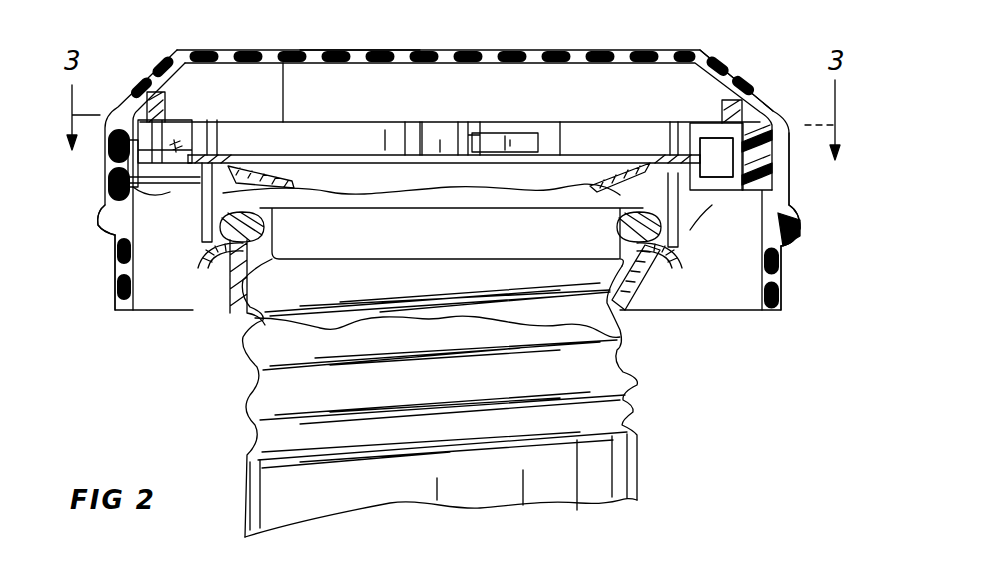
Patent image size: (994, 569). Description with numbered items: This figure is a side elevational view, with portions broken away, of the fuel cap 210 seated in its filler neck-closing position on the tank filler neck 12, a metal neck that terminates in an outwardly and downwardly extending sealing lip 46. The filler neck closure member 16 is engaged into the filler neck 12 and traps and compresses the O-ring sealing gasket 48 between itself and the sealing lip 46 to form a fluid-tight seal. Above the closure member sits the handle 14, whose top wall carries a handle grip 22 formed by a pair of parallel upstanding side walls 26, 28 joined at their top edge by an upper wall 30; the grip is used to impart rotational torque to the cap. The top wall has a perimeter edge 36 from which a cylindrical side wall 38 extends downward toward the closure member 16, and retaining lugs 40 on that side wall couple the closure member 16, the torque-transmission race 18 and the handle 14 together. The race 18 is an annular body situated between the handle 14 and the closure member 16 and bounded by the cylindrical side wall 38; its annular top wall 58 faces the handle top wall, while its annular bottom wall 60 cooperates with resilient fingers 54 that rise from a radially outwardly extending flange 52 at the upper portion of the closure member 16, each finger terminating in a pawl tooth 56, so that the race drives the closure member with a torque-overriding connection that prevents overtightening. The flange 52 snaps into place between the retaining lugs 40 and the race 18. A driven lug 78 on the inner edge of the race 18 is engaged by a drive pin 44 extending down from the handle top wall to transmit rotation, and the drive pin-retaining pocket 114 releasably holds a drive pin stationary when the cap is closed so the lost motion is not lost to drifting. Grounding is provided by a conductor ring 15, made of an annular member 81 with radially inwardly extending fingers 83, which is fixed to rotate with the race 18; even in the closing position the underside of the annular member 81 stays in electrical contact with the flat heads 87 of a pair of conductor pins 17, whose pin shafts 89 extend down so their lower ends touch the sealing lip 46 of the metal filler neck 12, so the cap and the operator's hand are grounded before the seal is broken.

The tank filler neck 12 is at (247, 415).
The handle 14 is at (683, 50).
The conductor ring 15 is at (220, 140).
The filler neck closure member 16 is at (632, 332).
The conductor pins 17 is at (185, 242).
The torque-transmission race 18 is at (322, 135).
The handle grip 22 is at (295, 73).
The upstanding side walls 26 is at (520, 75).
The inner cap surface 28 is at (444, 107).
The upper wall 30 is at (367, 50).
The perimeter edge 36 is at (773, 113).
The cylindrical side wall 38 is at (117, 262).
The retaining lugs 40 is at (108, 230).
The drive pin 44 is at (443, 133).
The sealing lip 46 is at (193, 310).
The O-ring sealing gasket 48 is at (690, 232).
The flange 52 is at (130, 160).
The resilient fingers 54 is at (180, 145).
The pawl tooth 56 is at (718, 168).
The annular top wall 58 is at (408, 122).
The annular bottom wall 60 is at (570, 157).
The driven lug 78 is at (487, 147).
The annular member 81 is at (235, 160).
The radially inwardly extending fingers 83 is at (227, 157).
The flat heads 87 is at (135, 191).
The pin shafts 89 is at (200, 236).
The drive pin-retaining pocket 114 is at (650, 273).
The closure cap 210 is at (740, 72).